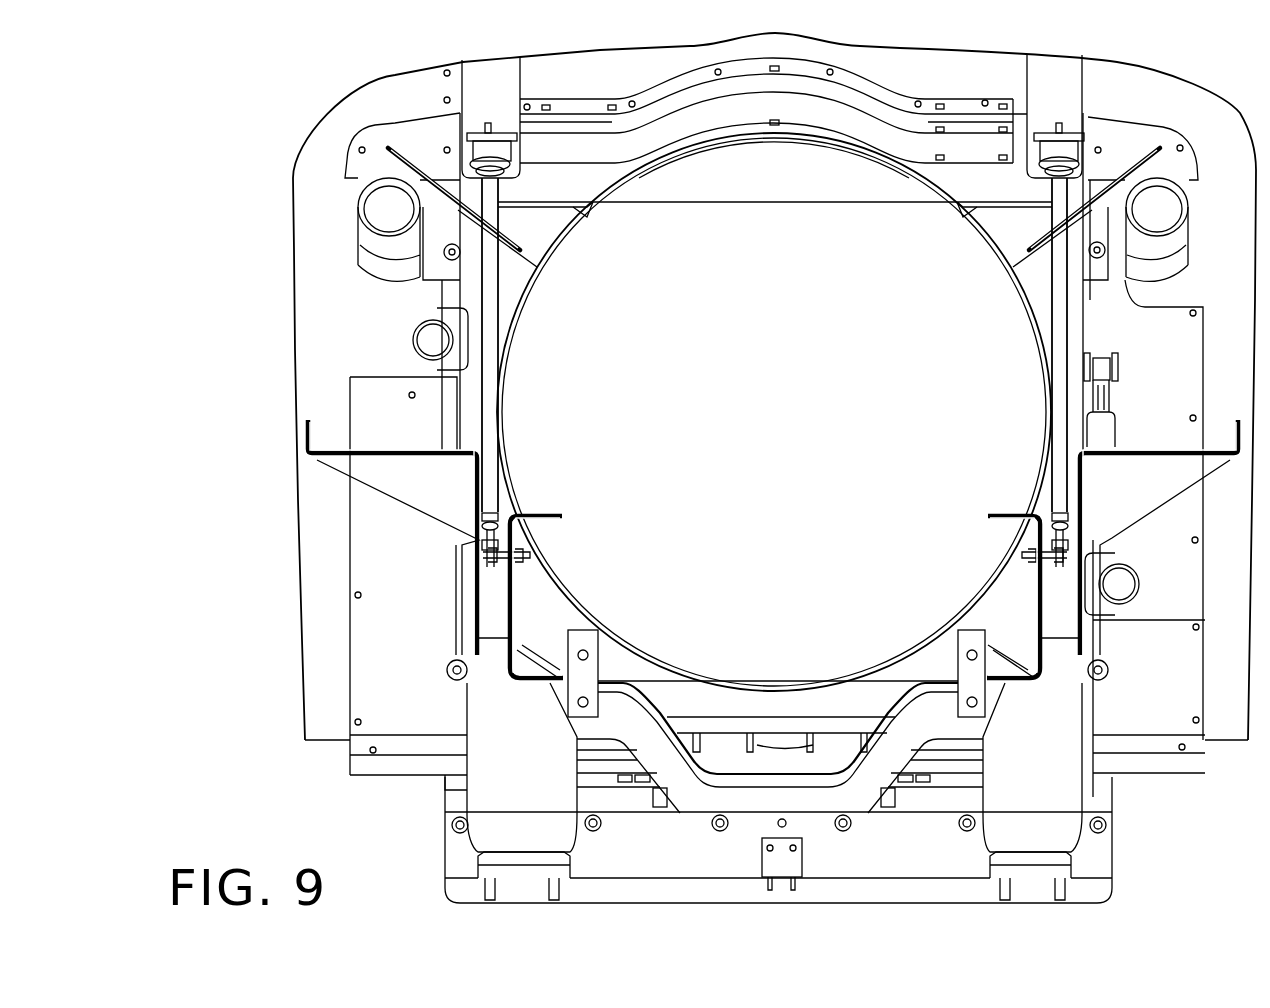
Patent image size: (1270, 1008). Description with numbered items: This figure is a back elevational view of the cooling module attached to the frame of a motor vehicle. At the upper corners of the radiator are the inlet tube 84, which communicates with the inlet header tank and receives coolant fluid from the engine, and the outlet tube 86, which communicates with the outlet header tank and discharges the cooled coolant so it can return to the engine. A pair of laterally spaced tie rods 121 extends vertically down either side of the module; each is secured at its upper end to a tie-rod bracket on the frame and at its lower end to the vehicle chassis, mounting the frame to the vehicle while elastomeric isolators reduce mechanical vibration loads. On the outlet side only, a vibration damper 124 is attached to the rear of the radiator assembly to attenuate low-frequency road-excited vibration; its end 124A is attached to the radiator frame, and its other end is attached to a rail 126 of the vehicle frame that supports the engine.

The inlet tube 84 is at (412, 339).
The outlet tube 86 is at (1140, 581).
The tie rods 121 is at (499, 320).
The vibration damper 124 is at (1097, 431).
The end of the vibration damper 124A is at (1102, 357).
The rail 126 is at (1084, 486).